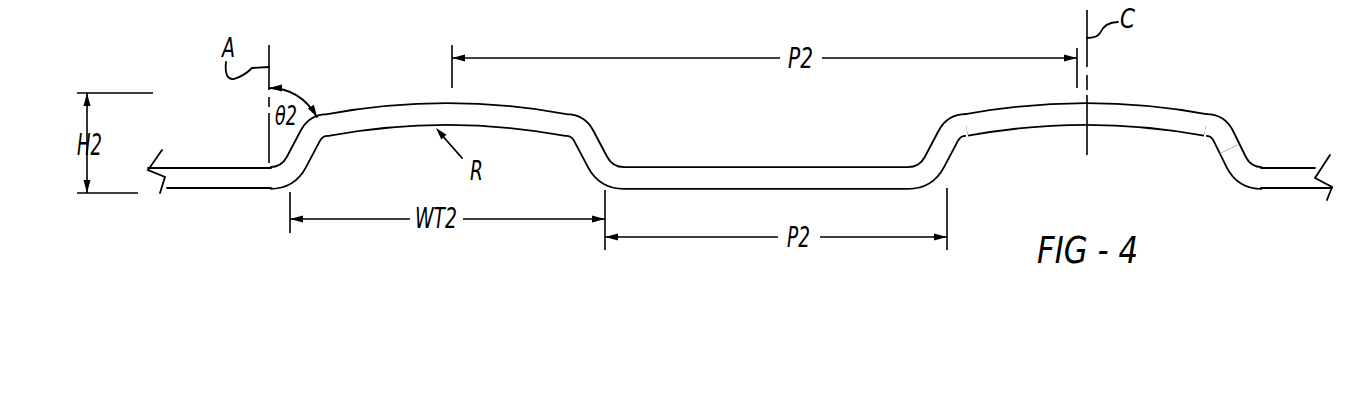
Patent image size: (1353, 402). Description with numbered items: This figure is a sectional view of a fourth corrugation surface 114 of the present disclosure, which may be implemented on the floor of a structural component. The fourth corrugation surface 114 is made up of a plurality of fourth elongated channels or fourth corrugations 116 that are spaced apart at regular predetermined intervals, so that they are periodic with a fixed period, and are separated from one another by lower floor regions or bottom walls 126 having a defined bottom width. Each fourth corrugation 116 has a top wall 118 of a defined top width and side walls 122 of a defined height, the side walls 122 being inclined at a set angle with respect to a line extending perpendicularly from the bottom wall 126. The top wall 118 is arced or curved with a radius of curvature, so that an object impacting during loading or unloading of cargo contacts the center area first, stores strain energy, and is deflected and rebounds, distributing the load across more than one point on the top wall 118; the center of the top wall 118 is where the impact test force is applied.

The fourth corrugation surface 114 is at (1255, 98).
The fourth corrugation 116 is at (1232, 127).
The top wall 118 is at (1143, 103).
The side wall 122 is at (953, 155).
The bottom wall 126 is at (747, 168).